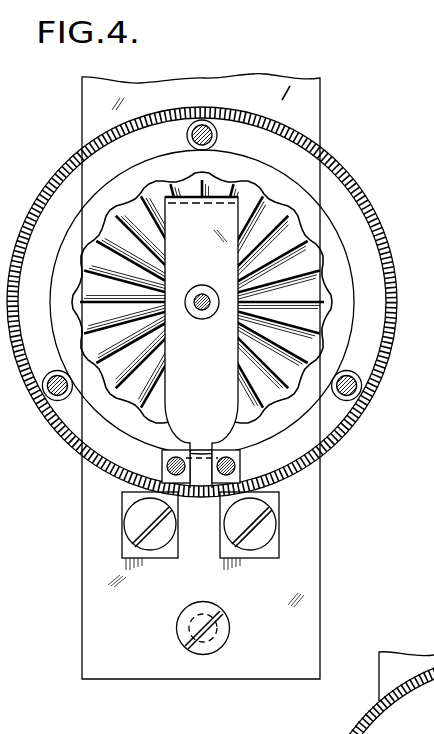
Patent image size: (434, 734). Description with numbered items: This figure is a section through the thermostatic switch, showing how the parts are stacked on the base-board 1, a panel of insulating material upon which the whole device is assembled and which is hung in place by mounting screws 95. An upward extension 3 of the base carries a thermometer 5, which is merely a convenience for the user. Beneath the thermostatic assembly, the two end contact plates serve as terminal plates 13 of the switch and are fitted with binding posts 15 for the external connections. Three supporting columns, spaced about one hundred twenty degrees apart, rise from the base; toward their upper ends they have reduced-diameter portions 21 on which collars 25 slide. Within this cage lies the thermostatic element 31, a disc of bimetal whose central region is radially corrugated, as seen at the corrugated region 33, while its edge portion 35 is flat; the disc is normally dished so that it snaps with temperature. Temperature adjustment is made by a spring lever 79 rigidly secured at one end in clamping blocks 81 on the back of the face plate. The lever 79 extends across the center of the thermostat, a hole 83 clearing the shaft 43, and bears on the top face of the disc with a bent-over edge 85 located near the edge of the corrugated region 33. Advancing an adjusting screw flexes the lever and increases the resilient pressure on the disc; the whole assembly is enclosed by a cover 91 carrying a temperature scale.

The base-board 1 is at (307, 568).
The upward extension 3 is at (90, 97).
The thermometer 5 is at (203, 700).
The terminal plates 13 is at (128, 503).
The binding posts 15 is at (128, 527).
The reduced-diameter portions 21 is at (188, 137).
The collars 25 is at (217, 140).
The thermostatic element 31 is at (333, 278).
The corrugated region 33 is at (320, 250).
The edge portion 35 is at (350, 330).
The shaft 43 is at (199, 292).
The spring lever 79 is at (172, 393).
The clamping blocks 81 is at (240, 470).
The hole 83 is at (206, 320).
The bent-over edge 85 is at (190, 205).
The cover 91 is at (337, 172).
The mounting screws 95 is at (178, 633).